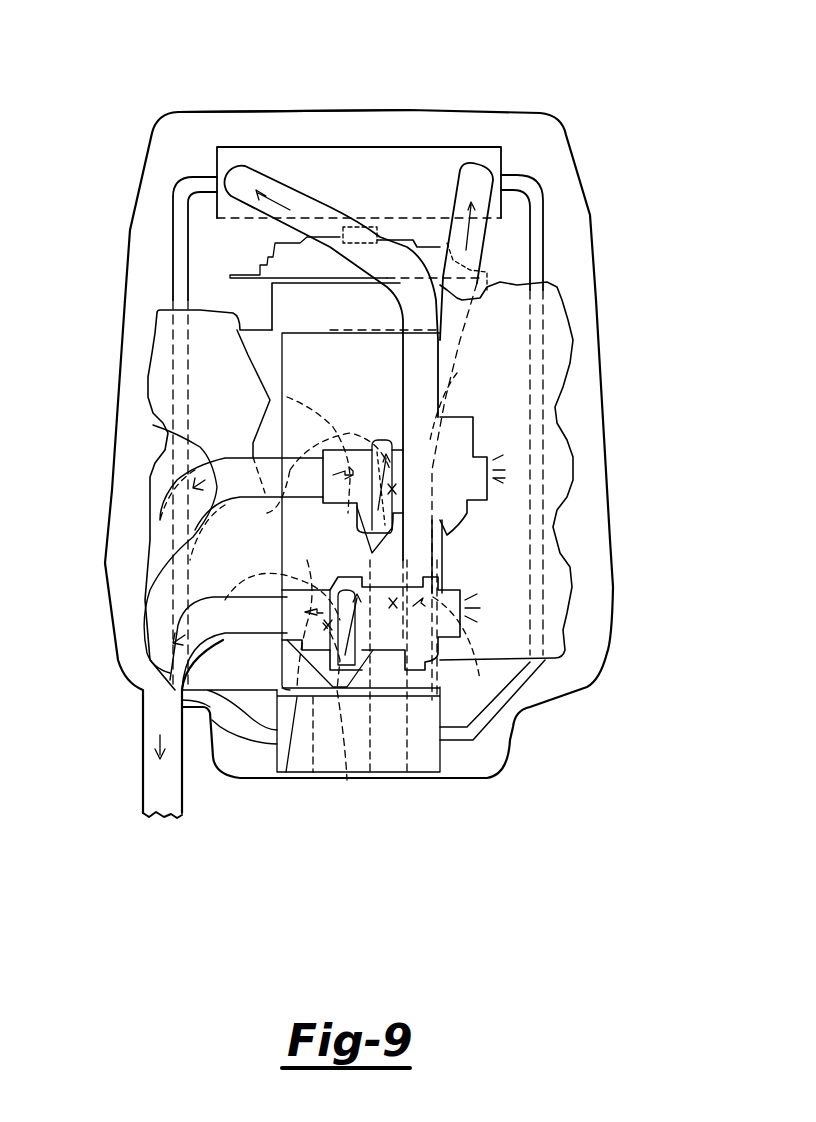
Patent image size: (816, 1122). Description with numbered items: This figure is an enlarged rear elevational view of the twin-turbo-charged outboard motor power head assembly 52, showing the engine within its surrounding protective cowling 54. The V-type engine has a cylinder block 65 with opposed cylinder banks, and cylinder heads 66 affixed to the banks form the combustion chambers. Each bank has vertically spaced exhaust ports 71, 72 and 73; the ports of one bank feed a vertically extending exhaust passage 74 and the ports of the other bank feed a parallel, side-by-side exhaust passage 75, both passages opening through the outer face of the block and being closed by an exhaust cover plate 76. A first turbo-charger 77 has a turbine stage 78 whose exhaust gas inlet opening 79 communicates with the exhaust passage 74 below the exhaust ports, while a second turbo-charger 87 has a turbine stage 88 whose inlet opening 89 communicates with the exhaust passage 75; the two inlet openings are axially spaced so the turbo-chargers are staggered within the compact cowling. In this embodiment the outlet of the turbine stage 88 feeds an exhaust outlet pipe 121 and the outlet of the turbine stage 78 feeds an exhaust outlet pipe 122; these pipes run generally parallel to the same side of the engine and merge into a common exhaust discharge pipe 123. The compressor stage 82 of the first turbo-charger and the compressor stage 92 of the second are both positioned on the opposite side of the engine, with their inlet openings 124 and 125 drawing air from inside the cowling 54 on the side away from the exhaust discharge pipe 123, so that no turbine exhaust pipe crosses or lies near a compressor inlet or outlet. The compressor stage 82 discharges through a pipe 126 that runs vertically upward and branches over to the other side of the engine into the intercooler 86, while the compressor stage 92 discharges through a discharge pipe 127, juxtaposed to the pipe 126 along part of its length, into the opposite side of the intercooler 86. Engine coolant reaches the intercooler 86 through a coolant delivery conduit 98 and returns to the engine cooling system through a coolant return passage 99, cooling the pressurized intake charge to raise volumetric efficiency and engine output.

The power head assembly 52 is at (210, 132).
The protective cowling 54 is at (147, 143).
The cylinder block 65 is at (393, 313).
The cylinder heads 66 is at (560, 375).
The exhaust port 71 is at (282, 398).
The exhaust port 72 is at (282, 510).
The exhaust port 73 is at (300, 620).
The exhaust passage 74 is at (347, 780).
The exhaust passage 75 is at (407, 782).
The exhaust cover plate 76 is at (393, 343).
The first turbo-charger 77 is at (393, 777).
The turbine stage 78 is at (282, 777).
The exhaust gas inlet opening 79 is at (317, 773).
The compressor stage 82 is at (517, 707).
The intercooler 86 is at (285, 140).
The second turbo-charger 87 is at (367, 440).
The turbine stage 88 is at (385, 440).
The inlet opening 89 is at (400, 577).
The compressor stage 92 is at (447, 520).
The coolant delivery conduit 98 is at (545, 207).
The coolant return passage 99 is at (173, 237).
The exhaust outlet pipe 121 is at (153, 425).
The exhaust outlet pipe 122 is at (215, 598).
The exhaust discharge pipe 123 is at (142, 787).
The inlet opening 124 is at (463, 637).
The inlet opening 125 is at (493, 477).
The discharge pipe 126 is at (305, 205).
The discharge pipe 127 is at (485, 243).